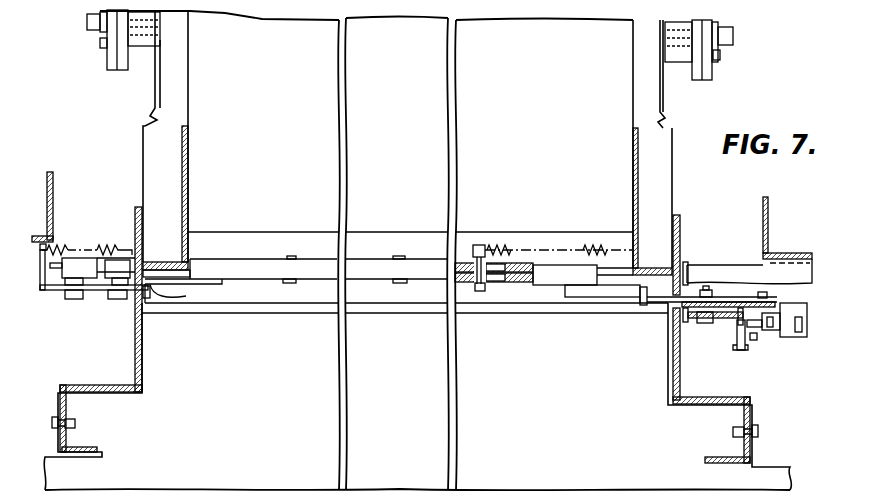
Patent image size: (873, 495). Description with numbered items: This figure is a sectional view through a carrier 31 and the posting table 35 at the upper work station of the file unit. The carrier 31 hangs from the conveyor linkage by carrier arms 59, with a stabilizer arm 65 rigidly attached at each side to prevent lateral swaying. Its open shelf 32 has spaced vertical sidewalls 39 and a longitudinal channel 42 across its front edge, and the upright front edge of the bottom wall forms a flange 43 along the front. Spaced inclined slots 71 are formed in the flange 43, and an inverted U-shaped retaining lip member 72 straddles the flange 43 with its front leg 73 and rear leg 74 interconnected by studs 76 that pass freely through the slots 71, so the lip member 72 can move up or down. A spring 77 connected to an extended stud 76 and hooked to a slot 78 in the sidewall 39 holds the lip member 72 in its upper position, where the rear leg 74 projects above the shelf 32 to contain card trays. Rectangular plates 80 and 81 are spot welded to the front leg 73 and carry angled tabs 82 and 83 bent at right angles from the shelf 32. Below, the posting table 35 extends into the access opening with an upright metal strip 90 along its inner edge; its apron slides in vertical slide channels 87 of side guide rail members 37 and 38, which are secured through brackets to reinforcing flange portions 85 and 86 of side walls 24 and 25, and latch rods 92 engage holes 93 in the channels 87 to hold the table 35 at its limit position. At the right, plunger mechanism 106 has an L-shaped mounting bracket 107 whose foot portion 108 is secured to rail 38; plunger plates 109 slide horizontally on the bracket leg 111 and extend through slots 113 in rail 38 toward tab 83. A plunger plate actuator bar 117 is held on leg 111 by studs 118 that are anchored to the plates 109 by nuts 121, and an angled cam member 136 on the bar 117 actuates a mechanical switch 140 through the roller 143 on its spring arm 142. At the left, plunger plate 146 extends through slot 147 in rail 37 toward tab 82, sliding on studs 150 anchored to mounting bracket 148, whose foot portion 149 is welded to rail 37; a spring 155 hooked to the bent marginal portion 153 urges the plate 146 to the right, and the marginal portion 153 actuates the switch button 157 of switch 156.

The side wall member 24 is at (55, 178).
The side wall member 25 is at (768, 212).
The carrier 31 is at (672, 84).
The shelf 32 is at (545, 159).
The posting table 35 is at (589, 435).
The side guide rail member 37 is at (135, 380).
The side guide rail member 38 is at (668, 388).
The vertical sidewall 39 is at (187, 200).
The longitudinal channel 42 is at (268, 232).
The flange 43 is at (540, 270).
The carrier arm 59 is at (118, 72).
The stabilizer arm 65 is at (100, 44).
The inclined slot 71 is at (508, 283).
The retaining lip member 72 is at (256, 267).
The front leg 73 is at (463, 283).
The rear leg 74 is at (472, 246).
The stud 76 is at (500, 284).
The spring 77 is at (498, 258).
The slot 78 is at (640, 252).
The rectangular plate 80 is at (206, 287).
The rectangular plate 81 is at (583, 288).
The angled tab projection 82 is at (168, 298).
The angled tab projection 83 is at (653, 300).
The reinforcing flange portion 85 is at (38, 240).
The reinforcing flange portion 86 is at (794, 255).
The vertical slide channel 87 is at (76, 407).
The upright metal strip 90 is at (306, 312).
The latch rod 92 is at (60, 413).
The hole 93 is at (74, 433).
The plunger mechanism 106 is at (752, 341).
The mounting bracket 107 is at (798, 337).
The foot portion 108 is at (703, 287).
The plunger plate 109 is at (722, 298).
The bracket leg 111 is at (752, 298).
The slot 113 is at (657, 325).
The plunger plate actuator bar 117 is at (725, 321).
The stud 118 is at (700, 324).
The nut 121 is at (760, 292).
The angled cam member 136 is at (737, 334).
The mechanical switch 140 is at (818, 298).
The spring arm 142 is at (776, 342).
The roller 143 is at (768, 313).
The plunger plate 146 is at (138, 350).
The slot 147 is at (188, 280).
The mounting bracket 148 is at (108, 259).
The foot portion 149 is at (135, 258).
The stud 150 is at (74, 300).
The marginal portion 153 is at (40, 252).
The spring 155 is at (105, 250).
The switch 156 is at (92, 268).
The switch button 157 is at (50, 291).